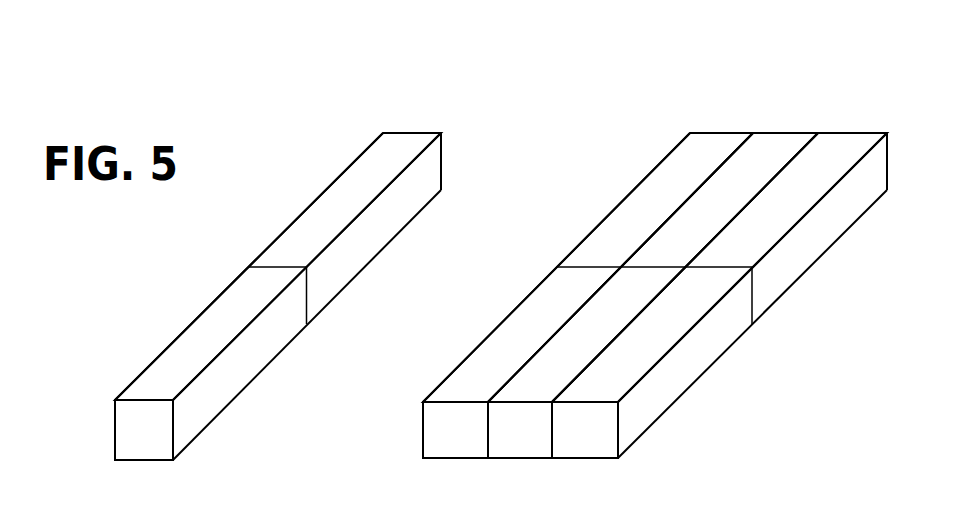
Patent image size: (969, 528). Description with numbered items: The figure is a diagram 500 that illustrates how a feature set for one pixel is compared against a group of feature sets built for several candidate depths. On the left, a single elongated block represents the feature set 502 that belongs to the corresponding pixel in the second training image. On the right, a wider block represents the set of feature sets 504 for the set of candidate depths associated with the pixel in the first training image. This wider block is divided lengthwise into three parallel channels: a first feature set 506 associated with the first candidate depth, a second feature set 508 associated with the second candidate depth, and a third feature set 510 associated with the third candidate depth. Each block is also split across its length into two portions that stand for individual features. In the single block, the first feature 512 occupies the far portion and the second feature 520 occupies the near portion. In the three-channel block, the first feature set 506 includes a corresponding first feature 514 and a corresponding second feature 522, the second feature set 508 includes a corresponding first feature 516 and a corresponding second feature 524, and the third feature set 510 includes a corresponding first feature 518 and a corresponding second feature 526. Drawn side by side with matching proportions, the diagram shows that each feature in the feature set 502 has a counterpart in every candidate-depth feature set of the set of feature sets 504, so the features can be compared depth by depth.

The diagram 500 is at (564, 90).
The feature set 502 is at (278, 263).
The set of feature sets 504 is at (623, 253).
The first feature set 506 is at (450, 440).
The second feature set 508 is at (532, 440).
The third feature set 510 is at (590, 440).
The first feature 512 is at (402, 143).
The corresponding first feature 514 is at (715, 143).
The corresponding first feature 516 is at (773, 145).
The corresponding first feature 518 is at (842, 145).
The second feature 520 is at (177, 363).
The corresponding second feature 522 is at (525, 320).
The corresponding second feature 524 is at (542, 377).
The corresponding second feature 526 is at (625, 360).